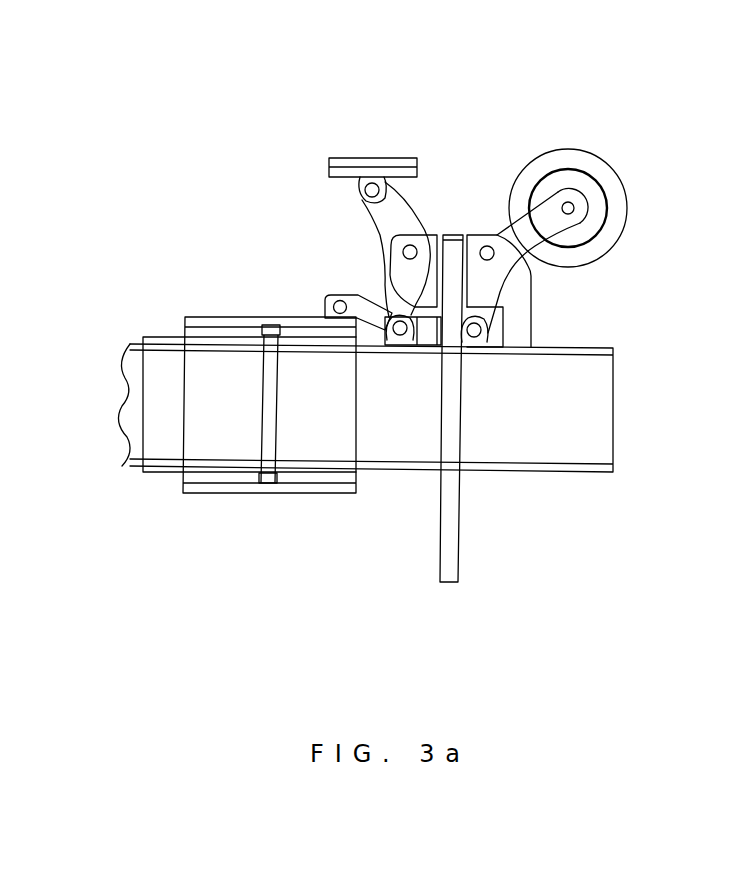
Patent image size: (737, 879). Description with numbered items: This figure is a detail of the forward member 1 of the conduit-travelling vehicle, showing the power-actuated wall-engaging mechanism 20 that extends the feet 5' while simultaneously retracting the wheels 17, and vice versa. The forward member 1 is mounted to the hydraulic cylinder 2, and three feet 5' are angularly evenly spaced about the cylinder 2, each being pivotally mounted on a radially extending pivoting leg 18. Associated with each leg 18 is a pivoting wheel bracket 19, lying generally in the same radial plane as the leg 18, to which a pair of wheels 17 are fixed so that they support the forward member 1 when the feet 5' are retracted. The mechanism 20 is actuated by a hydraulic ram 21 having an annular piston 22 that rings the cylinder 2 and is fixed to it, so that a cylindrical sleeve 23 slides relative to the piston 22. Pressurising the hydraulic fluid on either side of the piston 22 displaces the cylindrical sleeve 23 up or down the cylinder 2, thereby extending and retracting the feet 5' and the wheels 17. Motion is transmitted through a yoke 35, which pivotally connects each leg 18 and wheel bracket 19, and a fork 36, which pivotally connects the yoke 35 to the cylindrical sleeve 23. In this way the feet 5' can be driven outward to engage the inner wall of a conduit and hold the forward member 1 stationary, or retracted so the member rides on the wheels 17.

The forward member 1 is at (485, 77).
The hydraulic cylinder 2 is at (565, 352).
The feet 5' is at (373, 149).
The wheels 17 is at (585, 160).
The pivoting legs 18 is at (380, 212).
The pivoting wheel bracket 19 is at (496, 231).
The wall-engaging mechanism 20 is at (578, 288).
The hydraulic ram 21 is at (283, 496).
The annular piston 22 is at (254, 482).
The cylindrical sleeve 23 is at (324, 493).
The yoke 35 is at (432, 327).
The fork 36 is at (370, 310).